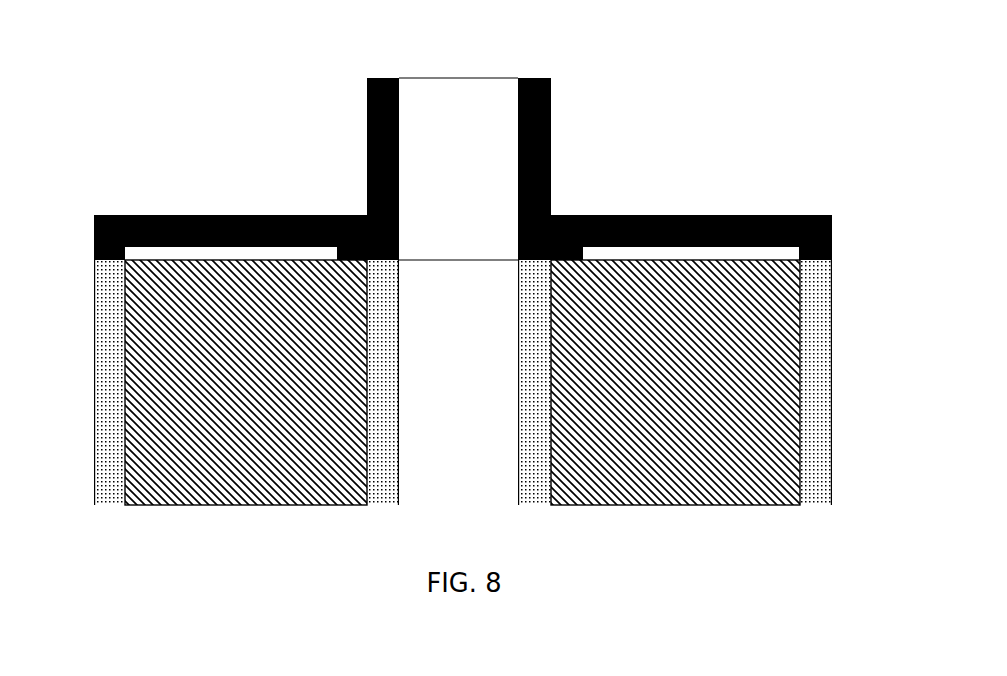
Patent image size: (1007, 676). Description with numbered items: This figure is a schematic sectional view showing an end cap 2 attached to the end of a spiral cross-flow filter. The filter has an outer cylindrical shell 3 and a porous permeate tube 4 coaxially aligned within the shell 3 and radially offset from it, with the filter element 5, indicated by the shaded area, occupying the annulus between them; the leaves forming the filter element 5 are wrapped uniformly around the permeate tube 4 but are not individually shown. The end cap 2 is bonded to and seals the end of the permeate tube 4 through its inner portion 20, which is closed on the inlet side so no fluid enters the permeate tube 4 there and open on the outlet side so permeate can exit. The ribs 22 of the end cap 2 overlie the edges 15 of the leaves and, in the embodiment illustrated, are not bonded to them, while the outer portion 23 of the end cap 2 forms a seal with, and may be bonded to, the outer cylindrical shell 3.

The end cap 2 is at (779, 138).
The outer cylindrical shell 3 is at (112, 387).
The permeate tube 4 is at (390, 363).
The filter element 5 is at (757, 438).
The edges of the leaves 15 is at (274, 257).
The inner portion of the end cap 20 is at (399, 116).
The ribs of the end cap 22 is at (195, 215).
The outer portion of the end cap 23 is at (832, 246).